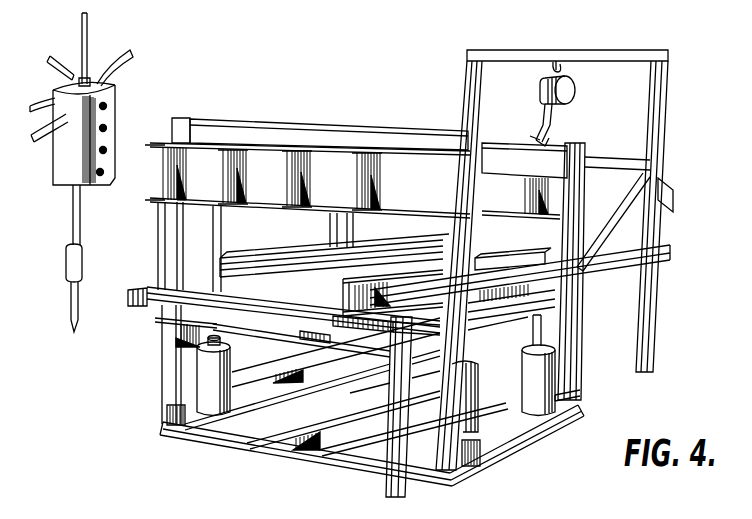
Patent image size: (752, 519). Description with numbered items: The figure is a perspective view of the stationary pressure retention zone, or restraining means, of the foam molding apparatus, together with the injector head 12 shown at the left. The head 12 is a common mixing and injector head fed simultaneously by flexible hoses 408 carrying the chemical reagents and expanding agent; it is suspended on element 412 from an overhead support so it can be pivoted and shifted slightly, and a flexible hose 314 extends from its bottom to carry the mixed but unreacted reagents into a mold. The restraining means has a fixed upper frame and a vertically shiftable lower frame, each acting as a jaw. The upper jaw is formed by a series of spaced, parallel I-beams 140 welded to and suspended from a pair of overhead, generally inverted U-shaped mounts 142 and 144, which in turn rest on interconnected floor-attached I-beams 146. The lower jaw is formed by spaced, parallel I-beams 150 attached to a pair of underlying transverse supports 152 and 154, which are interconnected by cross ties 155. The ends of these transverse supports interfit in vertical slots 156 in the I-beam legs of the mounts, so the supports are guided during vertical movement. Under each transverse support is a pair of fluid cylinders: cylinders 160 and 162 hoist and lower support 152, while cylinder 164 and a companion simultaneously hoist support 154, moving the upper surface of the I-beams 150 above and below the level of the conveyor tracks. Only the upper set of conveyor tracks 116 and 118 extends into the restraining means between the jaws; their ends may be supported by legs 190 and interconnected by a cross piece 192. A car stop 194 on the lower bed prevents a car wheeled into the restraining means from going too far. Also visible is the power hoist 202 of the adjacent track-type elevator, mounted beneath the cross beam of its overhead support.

The injector head 12 is at (122, 108).
The flexible hoses 408 is at (50, 58).
The suspension element 412 is at (90, 33).
The flexible hose 314 is at (72, 292).
The I-beams 140 is at (165, 165).
The U-shaped mount 142 is at (323, 133).
The U-shaped mount 144 is at (512, 150).
The power hoist 202 is at (567, 90).
The car stop 194 is at (242, 227).
The conveyor track 116 is at (140, 288).
The I-beams 150 is at (150, 330).
The conveyor track 118 is at (508, 284).
The transverse support 152 is at (372, 352).
The cross piece 192 is at (277, 337).
The vertical slots 156 is at (175, 362).
The transverse support 154 is at (548, 314).
The fluid cylinder 162 is at (481, 428).
The cross ties 155 is at (497, 320).
The fluid cylinder 164 is at (545, 378).
The fluid cylinder 160 is at (177, 402).
The legs 190 is at (377, 467).
The I-beams 146 is at (507, 435).